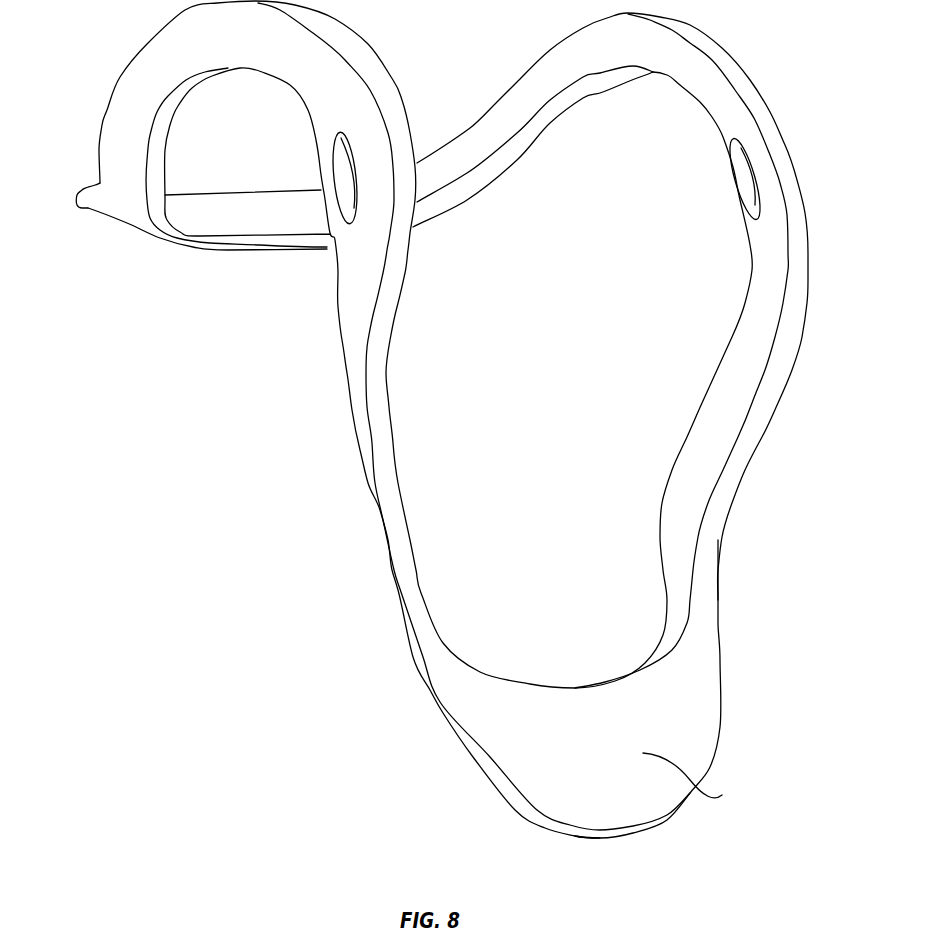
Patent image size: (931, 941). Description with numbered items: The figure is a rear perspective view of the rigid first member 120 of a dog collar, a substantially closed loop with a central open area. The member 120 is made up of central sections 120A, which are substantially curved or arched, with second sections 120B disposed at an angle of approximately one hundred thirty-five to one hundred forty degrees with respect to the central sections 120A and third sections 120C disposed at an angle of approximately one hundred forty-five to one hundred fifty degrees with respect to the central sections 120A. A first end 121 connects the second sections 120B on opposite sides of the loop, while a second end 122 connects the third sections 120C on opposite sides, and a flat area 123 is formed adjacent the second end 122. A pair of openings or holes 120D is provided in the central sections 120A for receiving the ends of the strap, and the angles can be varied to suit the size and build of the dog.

The first member 120 is at (770, 506).
The central section 120A is at (337, 85).
The second section 120B is at (87, 208).
The third section 120C is at (718, 560).
The opening 120D is at (333, 194).
The first end 121 is at (226, 192).
The second end 122 is at (610, 838).
The flat area 123 is at (701, 781).